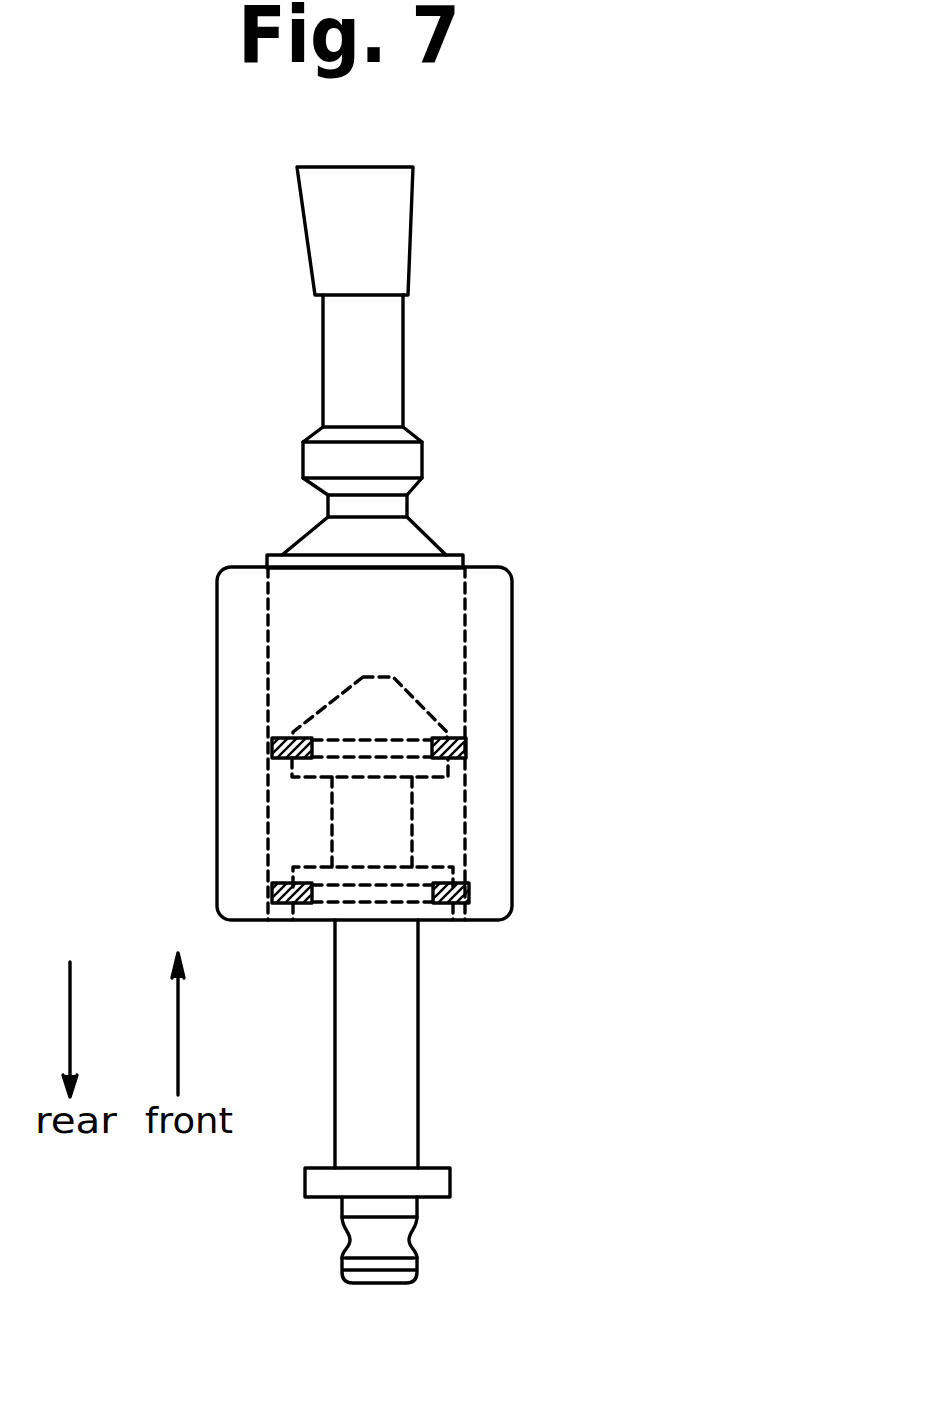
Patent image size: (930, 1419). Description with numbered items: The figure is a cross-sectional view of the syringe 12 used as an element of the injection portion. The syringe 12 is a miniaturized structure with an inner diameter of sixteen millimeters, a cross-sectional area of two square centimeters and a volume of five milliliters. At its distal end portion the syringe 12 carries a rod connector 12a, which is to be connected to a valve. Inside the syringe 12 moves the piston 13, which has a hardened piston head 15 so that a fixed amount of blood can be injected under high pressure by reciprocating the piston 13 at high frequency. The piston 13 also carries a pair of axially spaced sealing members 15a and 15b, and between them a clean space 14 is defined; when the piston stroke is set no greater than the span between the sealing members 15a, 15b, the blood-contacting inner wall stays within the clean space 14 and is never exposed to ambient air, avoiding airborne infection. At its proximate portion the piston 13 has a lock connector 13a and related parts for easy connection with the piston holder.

The syringe 12 is at (240, 737).
The rod connector 12a is at (303, 230).
The piston 13 is at (398, 1128).
The lock connector 13a is at (423, 1258).
The clean space 14 is at (442, 830).
The piston head 15 is at (363, 677).
The sealing member 15a is at (466, 749).
The sealing member 15b is at (469, 890).